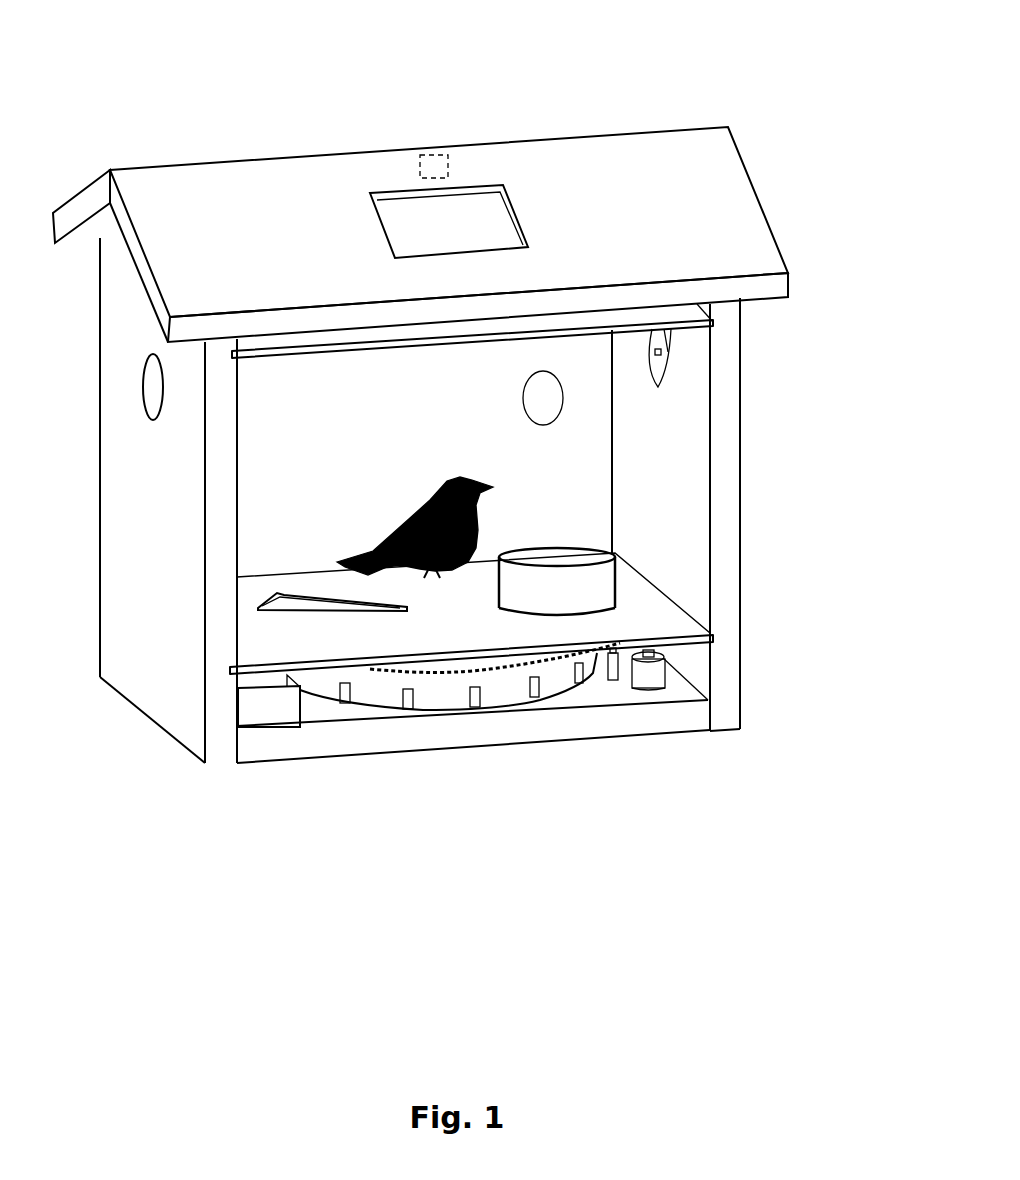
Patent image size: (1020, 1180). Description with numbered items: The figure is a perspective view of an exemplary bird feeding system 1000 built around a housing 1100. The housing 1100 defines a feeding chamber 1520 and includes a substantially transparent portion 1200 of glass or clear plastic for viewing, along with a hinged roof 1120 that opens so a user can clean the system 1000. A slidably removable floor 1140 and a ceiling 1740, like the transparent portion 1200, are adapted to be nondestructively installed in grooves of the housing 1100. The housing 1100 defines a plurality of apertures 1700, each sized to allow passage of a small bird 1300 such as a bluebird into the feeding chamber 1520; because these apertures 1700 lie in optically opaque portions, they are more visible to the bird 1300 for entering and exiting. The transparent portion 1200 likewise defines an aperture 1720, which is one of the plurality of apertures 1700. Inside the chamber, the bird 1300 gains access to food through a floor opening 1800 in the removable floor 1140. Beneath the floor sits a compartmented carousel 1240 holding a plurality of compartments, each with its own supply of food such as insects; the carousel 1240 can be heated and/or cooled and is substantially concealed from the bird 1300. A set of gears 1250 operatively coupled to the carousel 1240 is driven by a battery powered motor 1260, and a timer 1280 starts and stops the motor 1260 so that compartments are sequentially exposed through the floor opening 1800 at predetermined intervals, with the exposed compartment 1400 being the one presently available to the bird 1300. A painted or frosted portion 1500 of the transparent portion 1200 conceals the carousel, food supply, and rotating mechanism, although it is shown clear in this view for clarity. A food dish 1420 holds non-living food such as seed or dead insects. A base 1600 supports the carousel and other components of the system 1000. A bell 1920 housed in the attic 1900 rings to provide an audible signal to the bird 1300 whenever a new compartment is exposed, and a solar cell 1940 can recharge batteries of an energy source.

The system 1000 is at (333, 72).
The housing 1100 is at (682, 452).
The hinged roof 1120 is at (571, 187).
The removable floor 1140 is at (625, 608).
The substantially transparent portion 1200 is at (492, 537).
The compartmented carousel 1240 is at (558, 667).
The gears 1250 is at (613, 657).
The battery powered motor 1260 is at (650, 670).
The timer 1280 is at (270, 706).
The bird 1300 is at (421, 578).
The exposed compartment 1400 is at (290, 604).
The food dish 1420 is at (539, 542).
The painted or frosted portion 1500 is at (325, 712).
The feeding chamber 1520 is at (415, 501).
The base 1600 is at (682, 713).
The apertures 1700 is at (153, 380).
The aperture 1720 is at (544, 396).
The ceiling 1740 is at (622, 318).
The floor opening 1800 is at (273, 590).
The attic 1900 is at (247, 183).
The bell 1920 is at (437, 148).
The solar cell 1940 is at (422, 235).